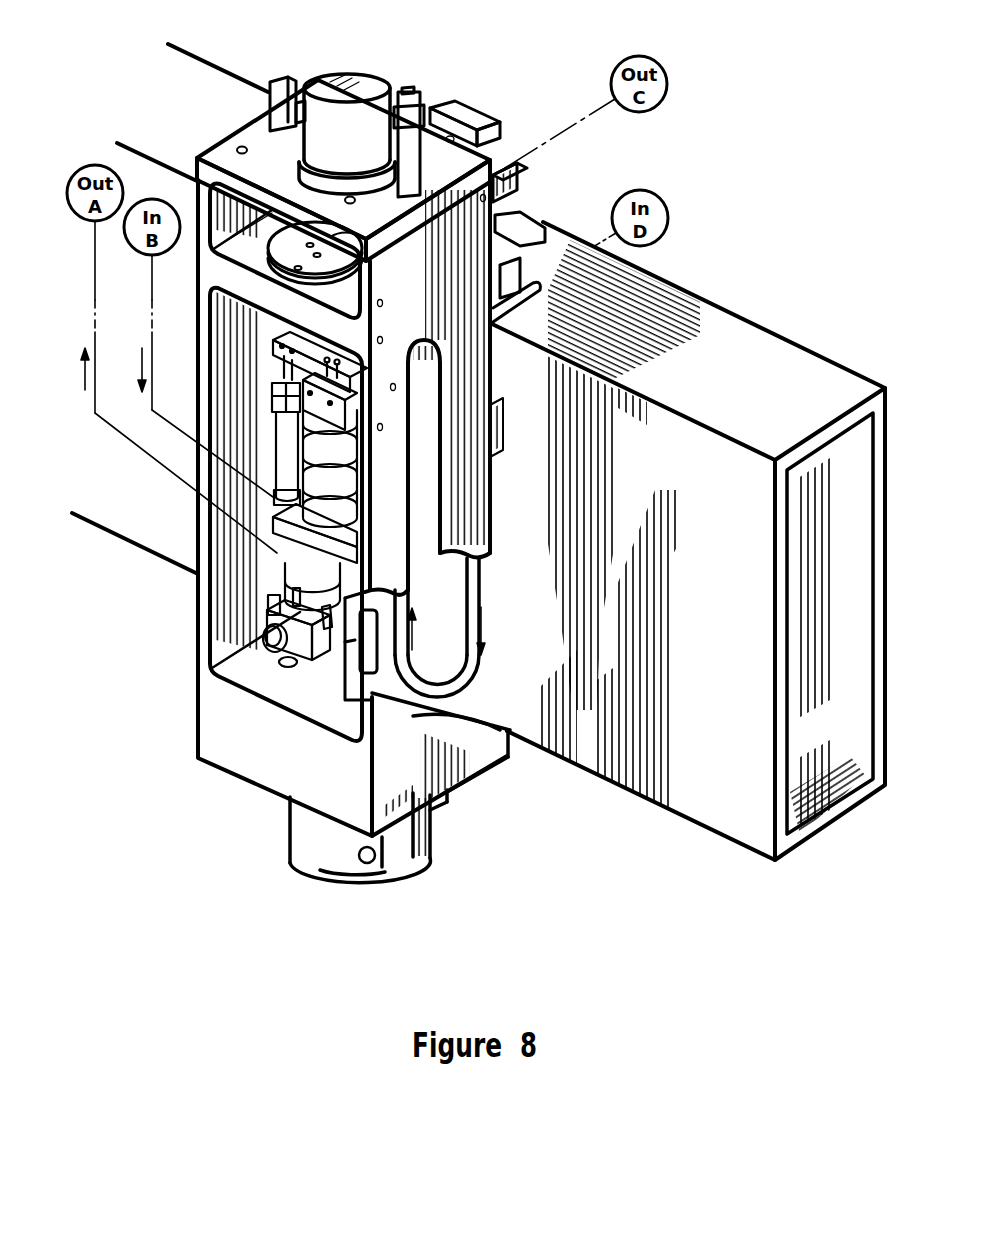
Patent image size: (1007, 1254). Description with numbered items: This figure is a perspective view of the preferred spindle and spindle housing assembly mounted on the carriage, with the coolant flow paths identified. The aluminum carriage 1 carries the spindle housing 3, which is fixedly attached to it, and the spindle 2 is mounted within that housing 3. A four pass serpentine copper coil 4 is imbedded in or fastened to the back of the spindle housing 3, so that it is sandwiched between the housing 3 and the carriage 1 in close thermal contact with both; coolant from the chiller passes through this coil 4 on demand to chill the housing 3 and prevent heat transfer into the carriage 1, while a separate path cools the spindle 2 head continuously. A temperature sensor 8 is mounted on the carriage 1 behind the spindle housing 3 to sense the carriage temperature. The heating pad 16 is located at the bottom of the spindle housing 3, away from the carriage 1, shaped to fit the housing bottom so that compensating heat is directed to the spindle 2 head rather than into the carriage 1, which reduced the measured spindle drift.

The carriage 1 is at (725, 307).
The spindle 2 is at (330, 660).
The spindle housing 3 is at (198, 632).
The serpentine copper coil 4 is at (473, 673).
The temperature sensor 8 is at (362, 662).
The heating pad 16 is at (487, 767).